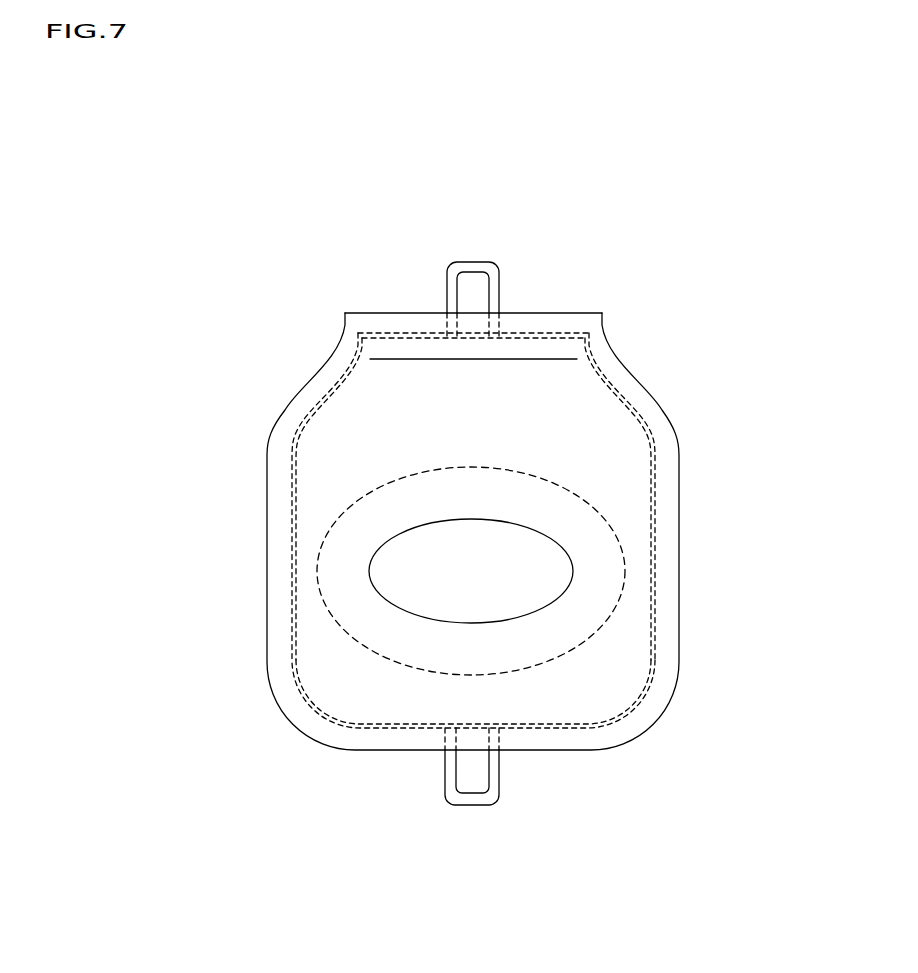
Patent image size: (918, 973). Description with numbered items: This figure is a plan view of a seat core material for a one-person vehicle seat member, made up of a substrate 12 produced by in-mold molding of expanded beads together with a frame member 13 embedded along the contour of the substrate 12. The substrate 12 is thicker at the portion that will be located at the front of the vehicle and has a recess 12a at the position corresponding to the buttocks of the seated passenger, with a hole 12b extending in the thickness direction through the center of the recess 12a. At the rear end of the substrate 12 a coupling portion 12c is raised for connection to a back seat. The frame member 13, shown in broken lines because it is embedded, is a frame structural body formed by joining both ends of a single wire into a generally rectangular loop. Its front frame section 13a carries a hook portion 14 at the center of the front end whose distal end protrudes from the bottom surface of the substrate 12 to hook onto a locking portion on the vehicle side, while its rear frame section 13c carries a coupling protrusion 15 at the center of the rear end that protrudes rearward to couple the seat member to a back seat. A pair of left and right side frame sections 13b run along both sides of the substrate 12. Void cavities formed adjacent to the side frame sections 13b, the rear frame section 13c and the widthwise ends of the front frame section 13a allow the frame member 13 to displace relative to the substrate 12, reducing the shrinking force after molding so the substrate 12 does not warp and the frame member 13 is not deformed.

The substrate 12 is at (637, 352).
The recess 12a is at (553, 510).
The hole 12b is at (562, 550).
The coupling portion 12c is at (373, 323).
The frame member 13 is at (479, 535).
The front frame section 13a is at (352, 748).
The side frame section 13b is at (655, 641).
The rear frame section 13c is at (557, 330).
The hook portion 14 is at (497, 790).
The coupling protrusion 15 is at (490, 268).